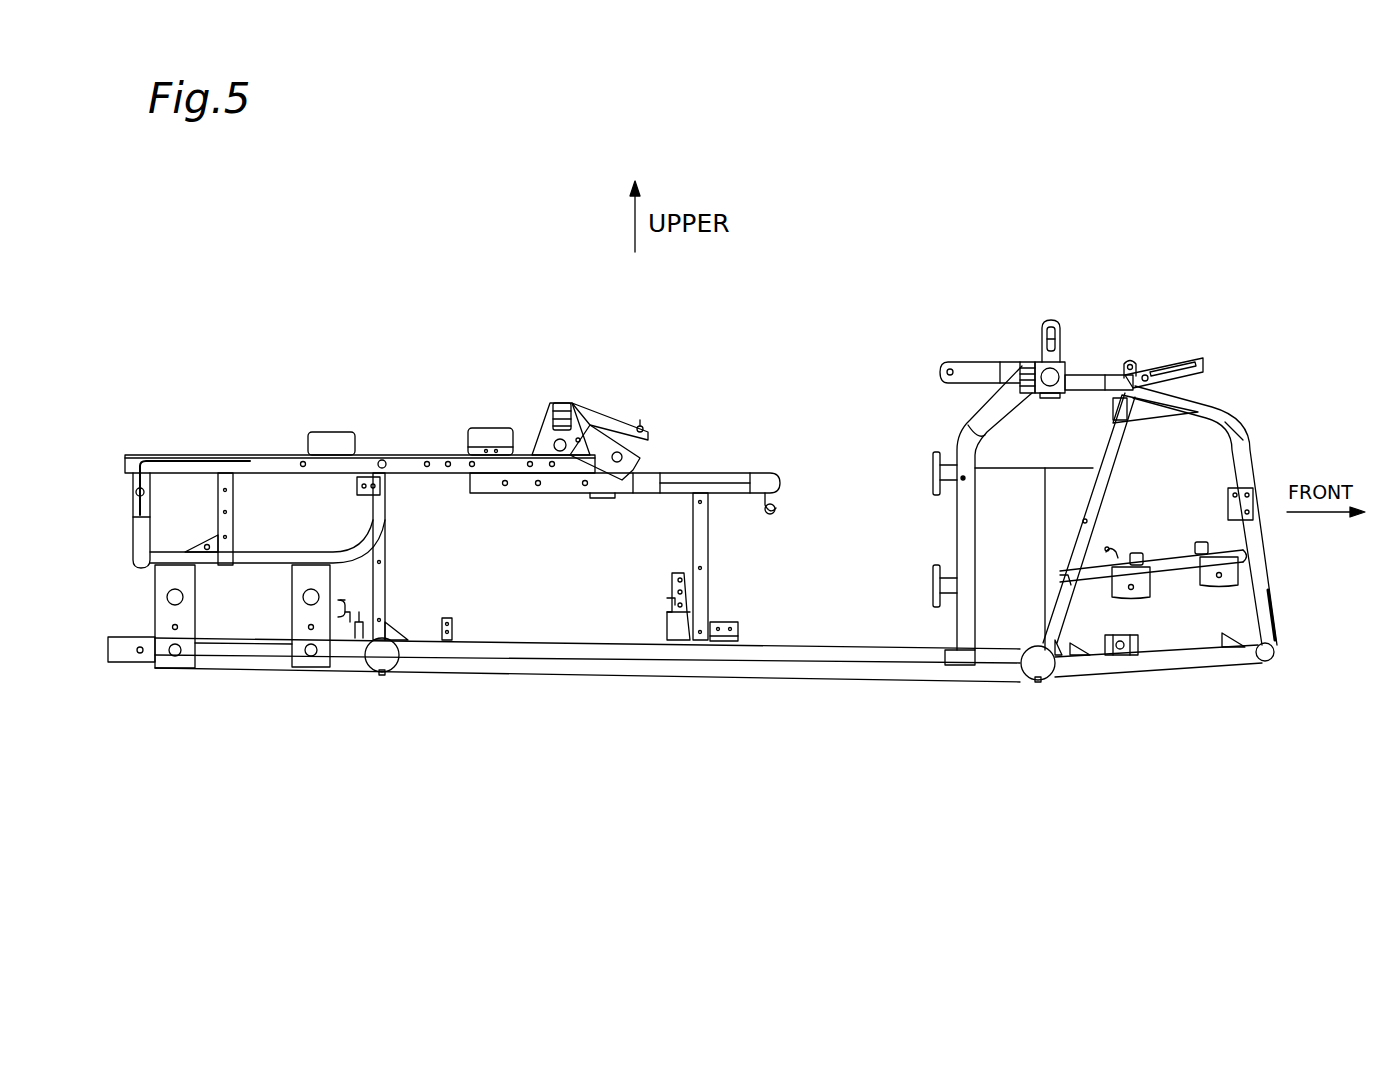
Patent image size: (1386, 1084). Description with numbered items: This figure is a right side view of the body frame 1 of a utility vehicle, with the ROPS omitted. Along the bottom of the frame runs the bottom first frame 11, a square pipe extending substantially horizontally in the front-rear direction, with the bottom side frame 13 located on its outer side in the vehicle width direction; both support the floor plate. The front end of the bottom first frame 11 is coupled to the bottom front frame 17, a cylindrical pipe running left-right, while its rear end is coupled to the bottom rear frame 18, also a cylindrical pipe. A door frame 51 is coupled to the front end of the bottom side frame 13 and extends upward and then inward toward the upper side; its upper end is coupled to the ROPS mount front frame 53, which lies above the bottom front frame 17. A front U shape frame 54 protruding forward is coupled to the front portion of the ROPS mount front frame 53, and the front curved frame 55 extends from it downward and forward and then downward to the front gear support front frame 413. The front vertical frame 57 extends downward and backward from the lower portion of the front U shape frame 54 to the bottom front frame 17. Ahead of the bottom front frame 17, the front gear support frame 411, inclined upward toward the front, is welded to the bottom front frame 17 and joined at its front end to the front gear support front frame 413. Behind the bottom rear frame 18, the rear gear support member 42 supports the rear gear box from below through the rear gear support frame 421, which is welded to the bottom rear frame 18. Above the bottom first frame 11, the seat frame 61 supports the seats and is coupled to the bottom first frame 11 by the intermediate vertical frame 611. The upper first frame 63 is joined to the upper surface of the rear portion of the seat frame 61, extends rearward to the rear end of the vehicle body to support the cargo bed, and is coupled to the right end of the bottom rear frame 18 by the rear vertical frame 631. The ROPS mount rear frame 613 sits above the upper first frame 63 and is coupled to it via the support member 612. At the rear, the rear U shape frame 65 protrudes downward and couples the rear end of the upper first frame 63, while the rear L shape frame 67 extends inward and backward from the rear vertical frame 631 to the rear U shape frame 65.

The body frame 1 is at (1165, 300).
The bottom first frame 11 is at (428, 662).
The bottom side frame 13 is at (627, 652).
The bottom front frame 17 is at (1048, 682).
The bottom rear frame 18 is at (385, 673).
The rear gear support member 42 is at (200, 692).
The rear gear support frame 421 is at (243, 653).
The front gear support front frame 413 is at (1273, 663).
The front gear support frame 411 is at (1168, 663).
The door frame 51 is at (960, 578).
The ROPS mount front frame 53 is at (1023, 360).
The front U shape frame 54 is at (1097, 372).
The front curved frame 55 is at (1243, 432).
The front vertical frame 57 is at (1090, 522).
The seat frame 61 is at (685, 473).
The intermediate vertical frame 611 is at (707, 587).
The support member 612 is at (545, 428).
The ROPS mount rear frame 613 is at (563, 403).
The upper first frame 63 is at (407, 455).
The rear vertical frame 631 is at (383, 538).
The rear U shape frame 65 is at (135, 530).
The rear L shape frame 67 is at (280, 627).